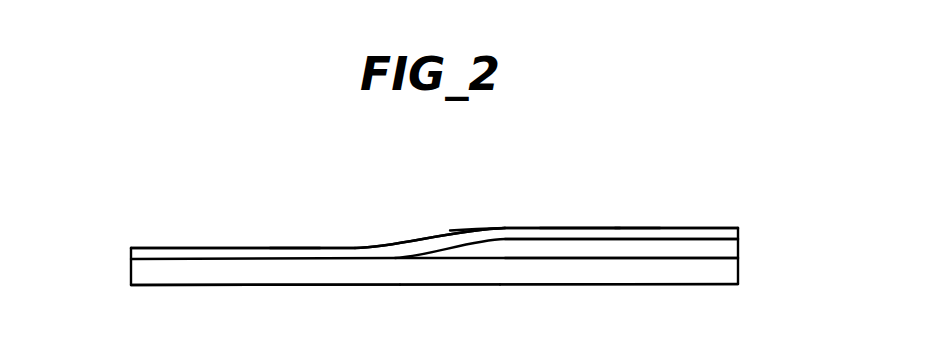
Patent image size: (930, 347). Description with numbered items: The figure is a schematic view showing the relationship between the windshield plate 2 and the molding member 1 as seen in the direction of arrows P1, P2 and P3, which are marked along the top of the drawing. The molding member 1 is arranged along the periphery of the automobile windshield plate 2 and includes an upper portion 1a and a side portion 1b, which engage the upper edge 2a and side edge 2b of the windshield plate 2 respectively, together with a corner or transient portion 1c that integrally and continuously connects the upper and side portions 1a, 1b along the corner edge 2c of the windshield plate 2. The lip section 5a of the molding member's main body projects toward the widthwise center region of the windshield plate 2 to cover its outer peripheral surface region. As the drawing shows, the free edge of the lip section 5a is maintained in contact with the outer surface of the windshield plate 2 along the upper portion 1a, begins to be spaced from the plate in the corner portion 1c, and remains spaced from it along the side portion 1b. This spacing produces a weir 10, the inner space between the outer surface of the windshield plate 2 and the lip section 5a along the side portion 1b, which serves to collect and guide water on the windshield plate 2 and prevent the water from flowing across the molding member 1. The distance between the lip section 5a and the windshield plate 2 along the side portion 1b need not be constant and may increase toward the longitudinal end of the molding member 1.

The molding member 1 is at (716, 224).
The upper portion 1a is at (165, 250).
The side portion 1b is at (678, 228).
The corner portion 1c is at (428, 237).
The windshield plate 2 is at (732, 268).
The upper edge 2a is at (253, 279).
The side edge 2b is at (663, 283).
The corner edge 2c is at (440, 283).
The lip section 5a is at (592, 228).
The weir 10 is at (556, 247).
The arrow P1 is at (292, 246).
The arrow P2 is at (473, 228).
The arrow P3 is at (637, 228).